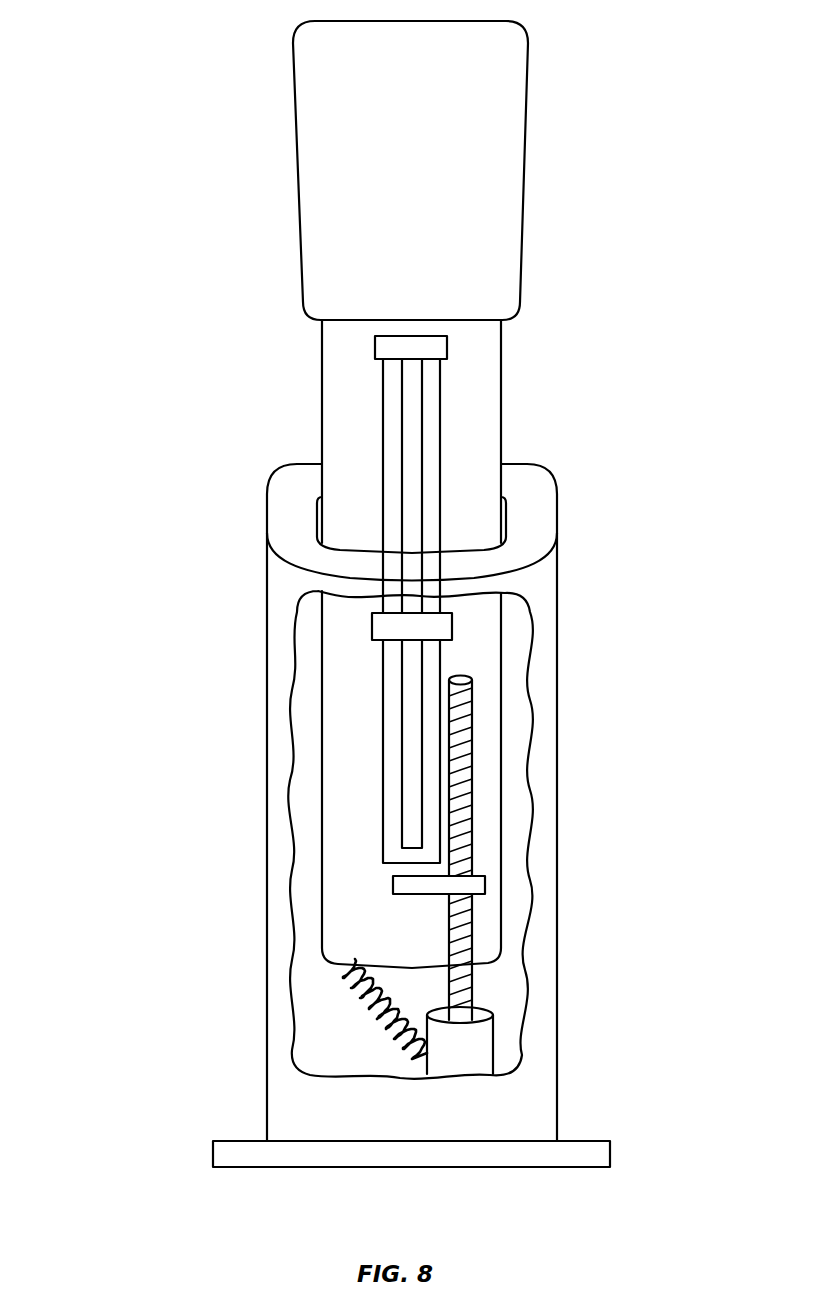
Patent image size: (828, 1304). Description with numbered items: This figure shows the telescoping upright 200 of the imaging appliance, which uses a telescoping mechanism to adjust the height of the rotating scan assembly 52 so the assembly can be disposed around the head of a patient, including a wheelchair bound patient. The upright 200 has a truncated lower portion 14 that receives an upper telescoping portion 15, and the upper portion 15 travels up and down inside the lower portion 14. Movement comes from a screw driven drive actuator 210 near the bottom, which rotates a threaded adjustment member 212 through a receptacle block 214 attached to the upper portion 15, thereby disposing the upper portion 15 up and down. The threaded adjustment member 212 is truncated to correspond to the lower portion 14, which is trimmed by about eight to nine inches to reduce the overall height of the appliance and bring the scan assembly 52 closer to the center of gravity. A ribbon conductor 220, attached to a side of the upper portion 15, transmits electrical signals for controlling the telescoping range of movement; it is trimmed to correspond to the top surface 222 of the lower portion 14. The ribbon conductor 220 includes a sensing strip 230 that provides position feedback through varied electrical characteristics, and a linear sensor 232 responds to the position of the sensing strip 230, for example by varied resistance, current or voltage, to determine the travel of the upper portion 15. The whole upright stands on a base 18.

The lower portion 14 is at (557, 593).
The upper portion 15 is at (501, 352).
The base 18 is at (587, 1141).
The rotating scan assembly 52 is at (528, 163).
The telescoping upright 200 is at (226, 839).
The drive actuator 210 is at (470, 1038).
The threaded adjustment member 212 is at (465, 713).
The receptacle block 214 is at (485, 882).
The ribbon conductor 220 is at (355, 1003).
The top surface 222 is at (436, 525).
The sensing strip 230 is at (410, 415).
The linear sensor 232 is at (385, 627).